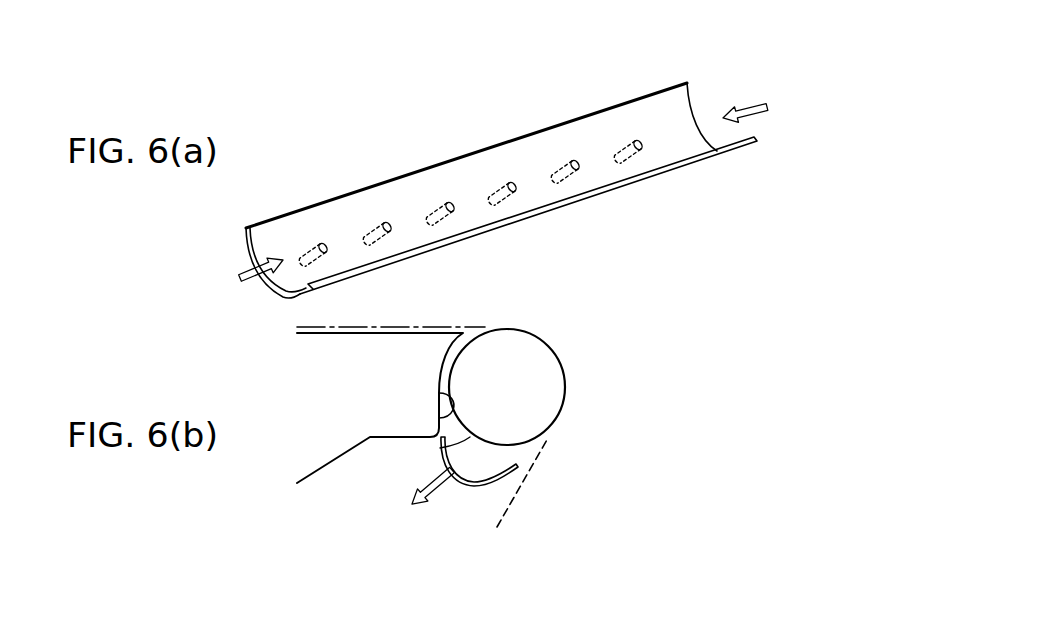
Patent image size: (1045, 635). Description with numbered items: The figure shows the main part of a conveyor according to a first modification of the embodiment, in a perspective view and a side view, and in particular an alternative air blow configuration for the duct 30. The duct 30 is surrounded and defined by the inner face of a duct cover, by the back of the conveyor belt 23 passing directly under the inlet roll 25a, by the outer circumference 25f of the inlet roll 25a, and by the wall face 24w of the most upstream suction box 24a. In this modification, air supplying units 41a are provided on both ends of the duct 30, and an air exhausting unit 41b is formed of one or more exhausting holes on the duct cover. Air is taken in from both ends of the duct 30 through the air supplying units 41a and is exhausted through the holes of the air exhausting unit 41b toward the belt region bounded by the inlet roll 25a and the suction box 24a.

The air supplying units 41a is at (233, 250).
The air exhausting unit 41b is at (402, 539).
The most upstream suction box 24a is at (353, 410).
The wall face 24w is at (438, 393).
The inlet roll 25a is at (557, 374).
The outer circumference 25f is at (440, 448).
The duct 30 is at (477, 467).
The conveyor belt 23 is at (523, 482).